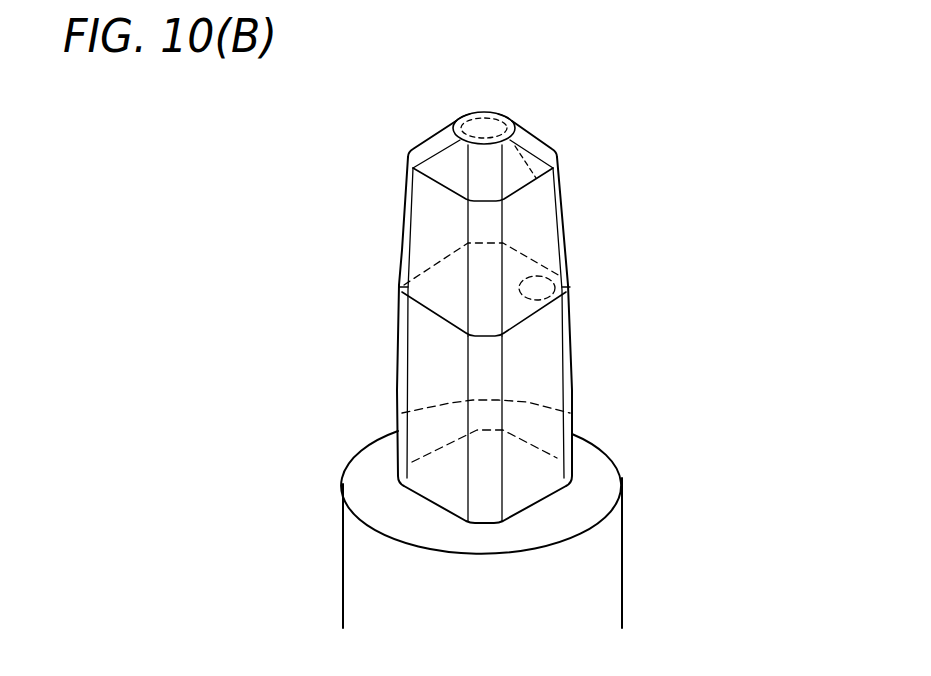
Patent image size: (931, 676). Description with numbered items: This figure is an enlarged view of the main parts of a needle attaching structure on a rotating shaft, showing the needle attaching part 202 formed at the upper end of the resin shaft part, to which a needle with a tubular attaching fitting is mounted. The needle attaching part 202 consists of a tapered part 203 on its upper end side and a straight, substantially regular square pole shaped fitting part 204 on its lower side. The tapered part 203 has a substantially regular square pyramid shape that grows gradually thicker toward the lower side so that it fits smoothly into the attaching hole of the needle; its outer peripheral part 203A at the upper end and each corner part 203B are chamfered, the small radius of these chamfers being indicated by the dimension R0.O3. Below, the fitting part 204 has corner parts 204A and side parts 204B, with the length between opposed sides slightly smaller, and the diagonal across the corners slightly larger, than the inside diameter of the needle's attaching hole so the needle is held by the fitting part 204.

The needle attaching part 202 is at (393, 256).
The tapered part 203 is at (543, 240).
The outer peripheral part 203A is at (442, 162).
The corner part 203B is at (403, 197).
The fitting part 204 is at (545, 385).
The corner part 204A is at (397, 375).
The side part 204B is at (437, 485).
The fillet radius R0.O3 is at (645, 127).